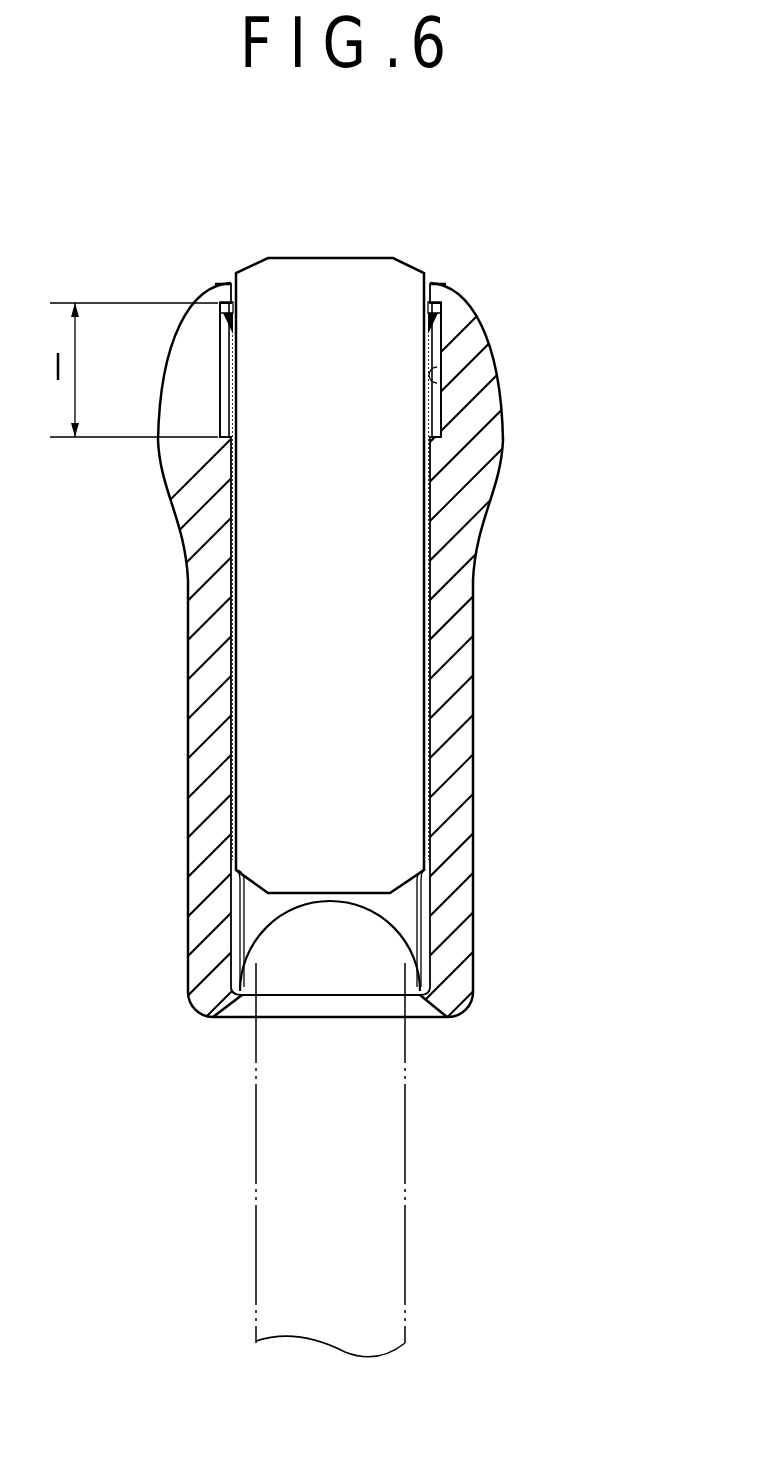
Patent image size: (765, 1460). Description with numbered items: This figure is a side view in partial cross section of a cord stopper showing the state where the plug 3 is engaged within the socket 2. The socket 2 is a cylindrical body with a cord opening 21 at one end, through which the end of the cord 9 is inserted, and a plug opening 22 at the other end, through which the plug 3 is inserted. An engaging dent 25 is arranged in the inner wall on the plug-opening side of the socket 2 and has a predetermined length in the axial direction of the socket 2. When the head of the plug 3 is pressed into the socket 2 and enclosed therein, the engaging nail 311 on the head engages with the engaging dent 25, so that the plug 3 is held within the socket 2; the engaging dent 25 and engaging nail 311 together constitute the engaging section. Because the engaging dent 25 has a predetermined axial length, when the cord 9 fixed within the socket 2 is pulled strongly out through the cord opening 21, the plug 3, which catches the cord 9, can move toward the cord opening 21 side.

The socket 2 is at (497, 473).
The plug 3 is at (323, 272).
The cord 9 is at (397, 1197).
The cord opening 21 is at (419, 1034).
The plug opening 22 is at (224, 266).
The engaging dent 25 is at (443, 383).
The engaging nail 311 is at (434, 318).